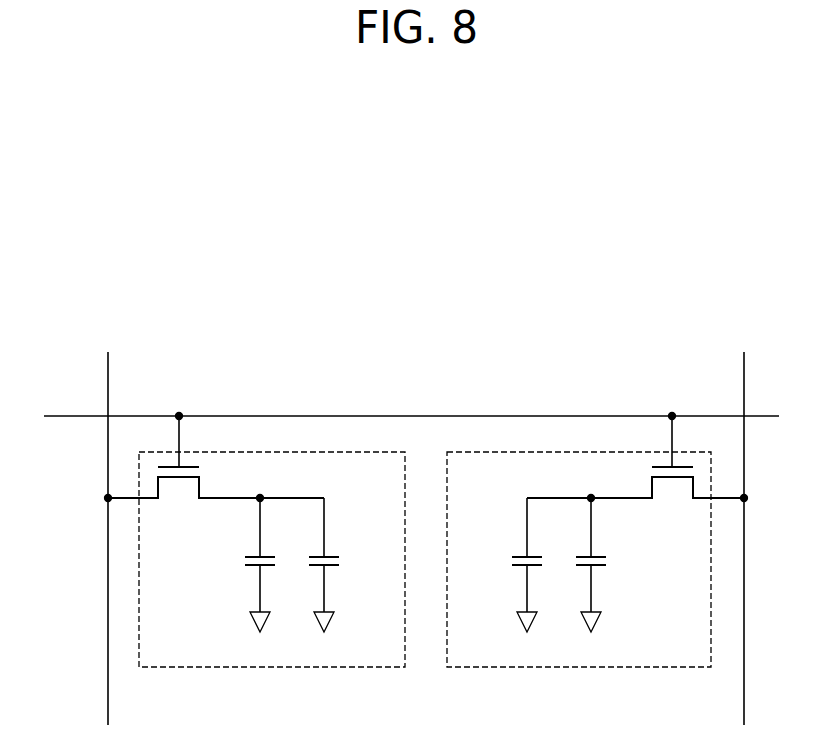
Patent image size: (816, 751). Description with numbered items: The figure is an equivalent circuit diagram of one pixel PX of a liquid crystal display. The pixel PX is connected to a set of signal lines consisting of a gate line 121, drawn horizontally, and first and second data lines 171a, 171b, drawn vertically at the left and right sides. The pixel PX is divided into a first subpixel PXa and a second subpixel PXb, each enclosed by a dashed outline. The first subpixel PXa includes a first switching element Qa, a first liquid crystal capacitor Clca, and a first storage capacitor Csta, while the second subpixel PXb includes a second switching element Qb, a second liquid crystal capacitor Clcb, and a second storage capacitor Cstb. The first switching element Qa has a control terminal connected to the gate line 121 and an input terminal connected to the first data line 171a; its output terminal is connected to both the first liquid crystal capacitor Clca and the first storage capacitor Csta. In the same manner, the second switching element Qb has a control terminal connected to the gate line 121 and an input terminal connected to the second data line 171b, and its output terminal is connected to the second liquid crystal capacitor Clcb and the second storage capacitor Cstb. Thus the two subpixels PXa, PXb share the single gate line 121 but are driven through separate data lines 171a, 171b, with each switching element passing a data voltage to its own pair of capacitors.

The gate line 121 is at (70, 415).
The first data line 171a is at (108, 366).
The second data line 171b is at (744, 367).
The pixel PX is at (550, 355).
The first subpixel PXa is at (322, 452).
The second subpixel PXb is at (531, 452).
The first switching element Qa is at (215, 470).
The second switching element Qb is at (637, 470).
The first liquid crystal capacitor Clca is at (235, 564).
The first storage capacitor Csta is at (350, 565).
The second storage capacitor Cstb is at (501, 565).
The second liquid crystal capacitor Clcb is at (617, 564).